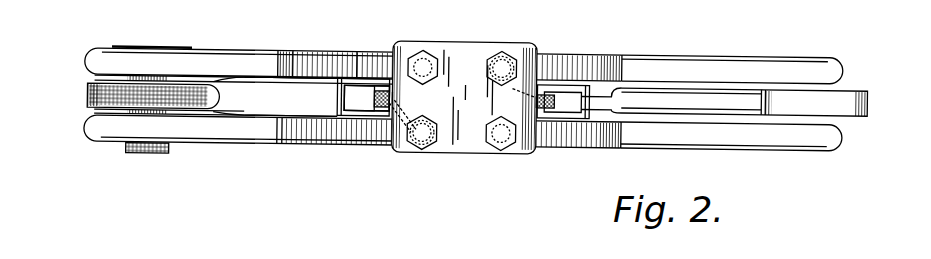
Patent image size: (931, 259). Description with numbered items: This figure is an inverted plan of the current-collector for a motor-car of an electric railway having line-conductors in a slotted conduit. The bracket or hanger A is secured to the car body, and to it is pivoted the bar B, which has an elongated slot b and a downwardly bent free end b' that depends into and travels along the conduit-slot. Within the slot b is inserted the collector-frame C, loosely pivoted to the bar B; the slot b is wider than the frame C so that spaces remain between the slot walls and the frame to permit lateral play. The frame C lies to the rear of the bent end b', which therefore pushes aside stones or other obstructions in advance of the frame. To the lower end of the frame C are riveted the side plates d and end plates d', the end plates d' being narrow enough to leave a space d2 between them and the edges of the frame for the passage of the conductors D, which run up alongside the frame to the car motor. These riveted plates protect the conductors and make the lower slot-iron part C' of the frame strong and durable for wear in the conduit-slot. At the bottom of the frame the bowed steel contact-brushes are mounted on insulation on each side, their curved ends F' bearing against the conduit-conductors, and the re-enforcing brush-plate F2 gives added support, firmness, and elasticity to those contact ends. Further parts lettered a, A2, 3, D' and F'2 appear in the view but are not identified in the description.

The bracket or hanger A is at (87, 97).
The clip block a is at (157, 152).
The bar B is at (280, 94).
The elongated slot b is at (290, 96).
The collector-frame C is at (351, 60).
The side plates d is at (378, 58).
The end plates d' is at (362, 58).
The space d2 is at (368, 93).
The central plate A2 is at (468, 88).
The bolt 3 is at (438, 63).
The conductors D is at (410, 100).
The right pin D' is at (520, 100).
The slot-iron part C' is at (559, 139).
The bent free end b' is at (724, 102).
The re-enforcing brush-plate F2 is at (623, 53).
The bottom right hatched section F'2 is at (580, 149).
The curved ends F' is at (731, 102).